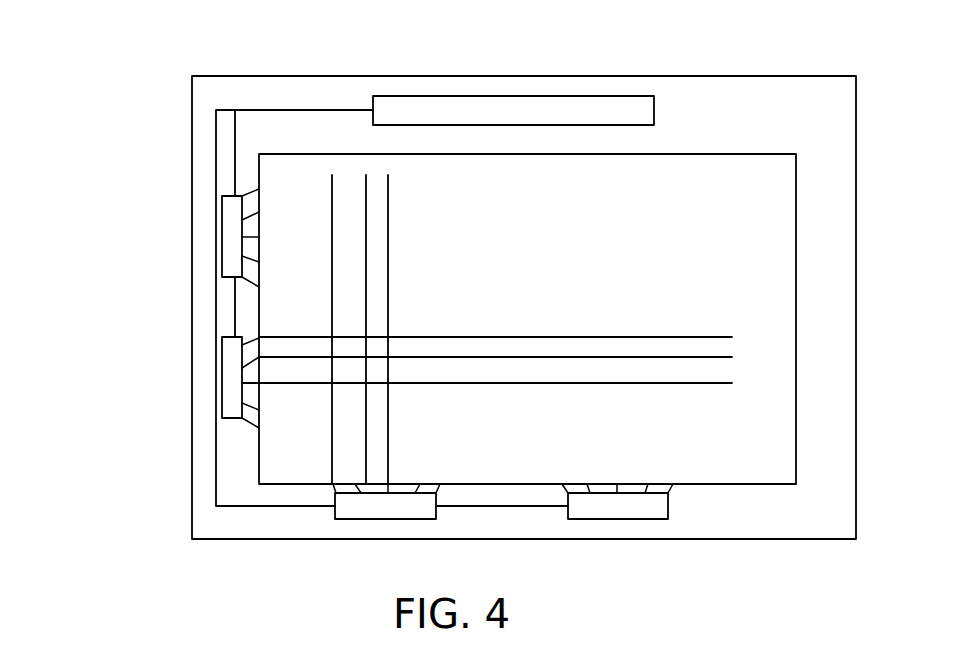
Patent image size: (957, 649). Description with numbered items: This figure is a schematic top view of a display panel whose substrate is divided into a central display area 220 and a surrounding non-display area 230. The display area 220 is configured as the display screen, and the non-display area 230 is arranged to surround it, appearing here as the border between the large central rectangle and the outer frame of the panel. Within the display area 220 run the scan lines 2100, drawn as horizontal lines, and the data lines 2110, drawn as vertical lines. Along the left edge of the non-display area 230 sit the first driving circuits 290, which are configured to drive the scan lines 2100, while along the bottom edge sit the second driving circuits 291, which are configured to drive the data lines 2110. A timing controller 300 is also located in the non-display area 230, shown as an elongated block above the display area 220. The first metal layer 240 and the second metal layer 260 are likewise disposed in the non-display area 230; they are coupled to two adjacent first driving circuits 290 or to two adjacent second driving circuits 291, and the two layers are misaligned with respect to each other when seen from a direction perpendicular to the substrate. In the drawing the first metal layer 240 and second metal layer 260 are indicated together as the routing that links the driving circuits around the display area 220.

The display area 220 is at (683, 177).
The non-display area 230 is at (805, 97).
The first metal layer 240 is at (392, 346).
The second metal layer 260 is at (386, 501).
The first driving circuits 290 is at (233, 357).
The second driving circuits 291 is at (580, 509).
The timing controller 300 is at (415, 110).
The scan lines 2100 is at (305, 338).
The data lines 2110 is at (330, 452).